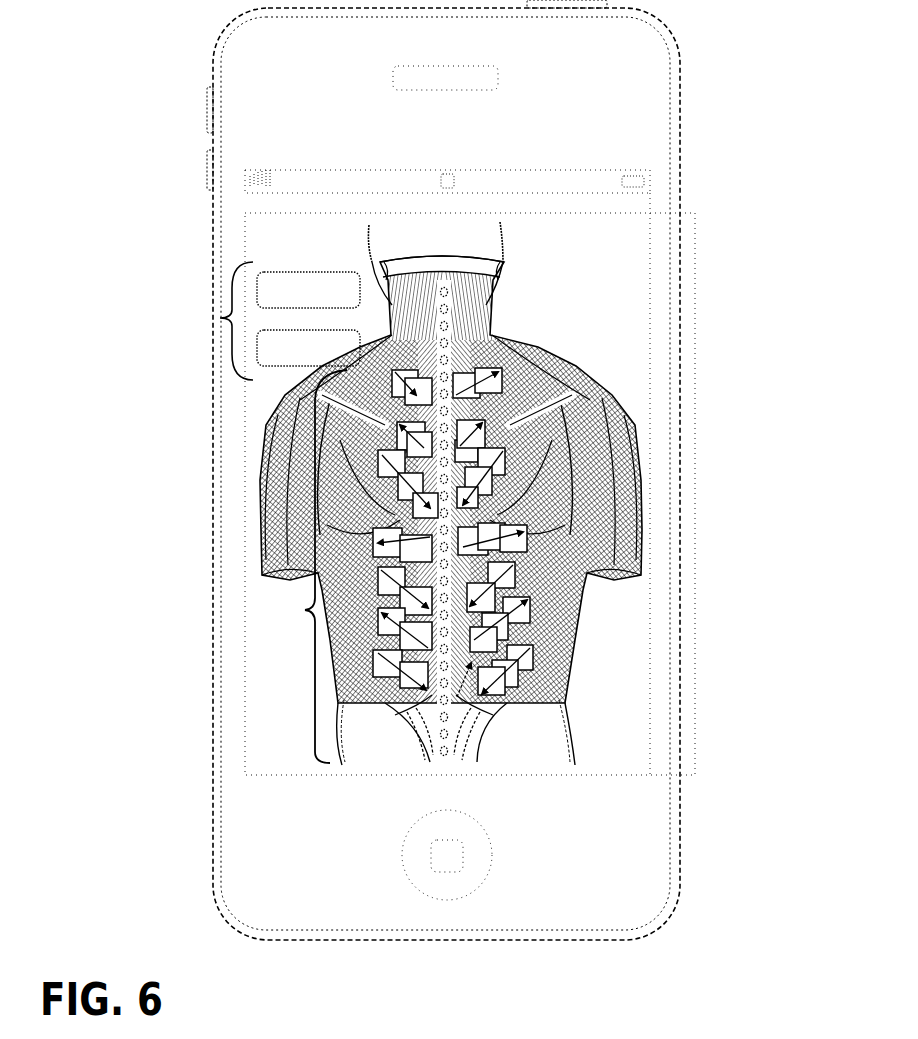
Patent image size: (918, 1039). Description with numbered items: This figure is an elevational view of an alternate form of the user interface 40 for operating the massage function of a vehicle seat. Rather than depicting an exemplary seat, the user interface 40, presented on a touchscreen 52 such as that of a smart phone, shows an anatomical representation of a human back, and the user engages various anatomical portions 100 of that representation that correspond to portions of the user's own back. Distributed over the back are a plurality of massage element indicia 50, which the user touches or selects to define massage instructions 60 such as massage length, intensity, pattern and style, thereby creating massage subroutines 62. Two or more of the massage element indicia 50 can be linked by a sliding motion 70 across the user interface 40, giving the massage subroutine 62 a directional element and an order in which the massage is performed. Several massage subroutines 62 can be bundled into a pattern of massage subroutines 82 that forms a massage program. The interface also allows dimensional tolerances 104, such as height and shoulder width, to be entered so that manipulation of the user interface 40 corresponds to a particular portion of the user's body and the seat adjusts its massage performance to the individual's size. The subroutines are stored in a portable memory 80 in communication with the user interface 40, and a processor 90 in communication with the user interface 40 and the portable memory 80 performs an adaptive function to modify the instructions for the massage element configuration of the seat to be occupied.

The processor 90 is at (272, 234).
The touchscreen 52 is at (597, 228).
The portable memory 80 is at (293, 748).
The dimensional tolerances 104 is at (220, 318).
The anatomical portions 100 is at (423, 549).
The user interface 40 is at (419, 549).
The massage instructions 60 is at (565, 587).
The massage element indicia 50 is at (563, 695).
The sliding motion 70 is at (385, 703).
The massage subroutines 62 is at (503, 367).
The pattern of massage subroutines 82 is at (303, 610).